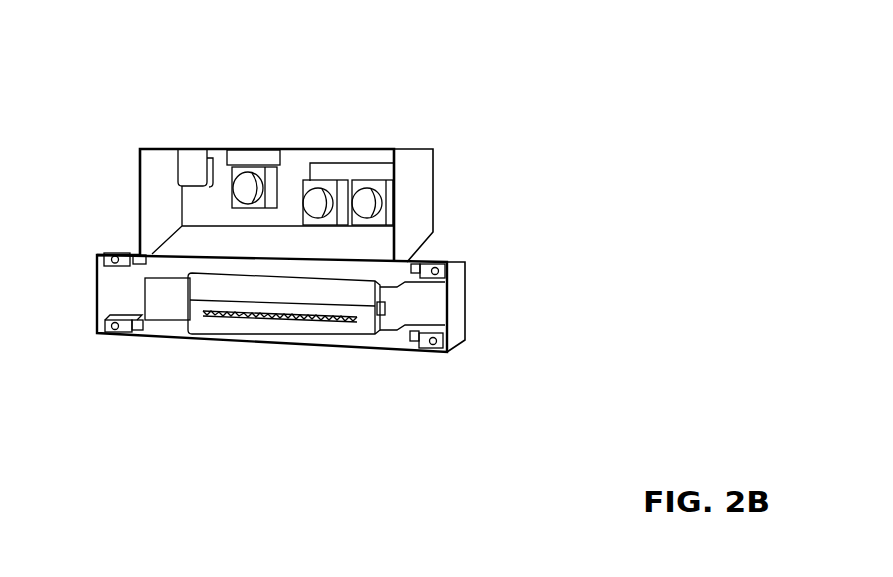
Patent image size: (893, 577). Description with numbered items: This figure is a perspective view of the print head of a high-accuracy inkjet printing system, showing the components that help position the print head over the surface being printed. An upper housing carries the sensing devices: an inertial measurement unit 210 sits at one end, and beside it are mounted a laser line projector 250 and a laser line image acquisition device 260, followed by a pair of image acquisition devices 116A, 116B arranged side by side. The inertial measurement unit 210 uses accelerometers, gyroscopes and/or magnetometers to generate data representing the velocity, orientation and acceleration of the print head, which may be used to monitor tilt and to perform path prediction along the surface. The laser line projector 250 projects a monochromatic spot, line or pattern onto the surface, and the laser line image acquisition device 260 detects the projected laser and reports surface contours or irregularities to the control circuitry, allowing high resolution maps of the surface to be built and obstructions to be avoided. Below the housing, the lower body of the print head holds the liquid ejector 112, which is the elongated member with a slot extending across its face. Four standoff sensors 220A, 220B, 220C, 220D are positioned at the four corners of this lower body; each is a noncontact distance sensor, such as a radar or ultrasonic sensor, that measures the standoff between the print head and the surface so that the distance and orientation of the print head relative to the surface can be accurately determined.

The inertial measurement unit 210 is at (187, 165).
The laser line projector 250 is at (237, 164).
The laser line image acquisition device 260 is at (271, 167).
The image acquisition device 116A is at (316, 203).
The image acquisition device 116B is at (364, 203).
The liquid ejector 112 is at (350, 320).
The standoff sensor 220A is at (112, 337).
The standoff sensor 220B is at (112, 252).
The standoff sensor 220C is at (433, 350).
The standoff sensor 220D is at (443, 259).